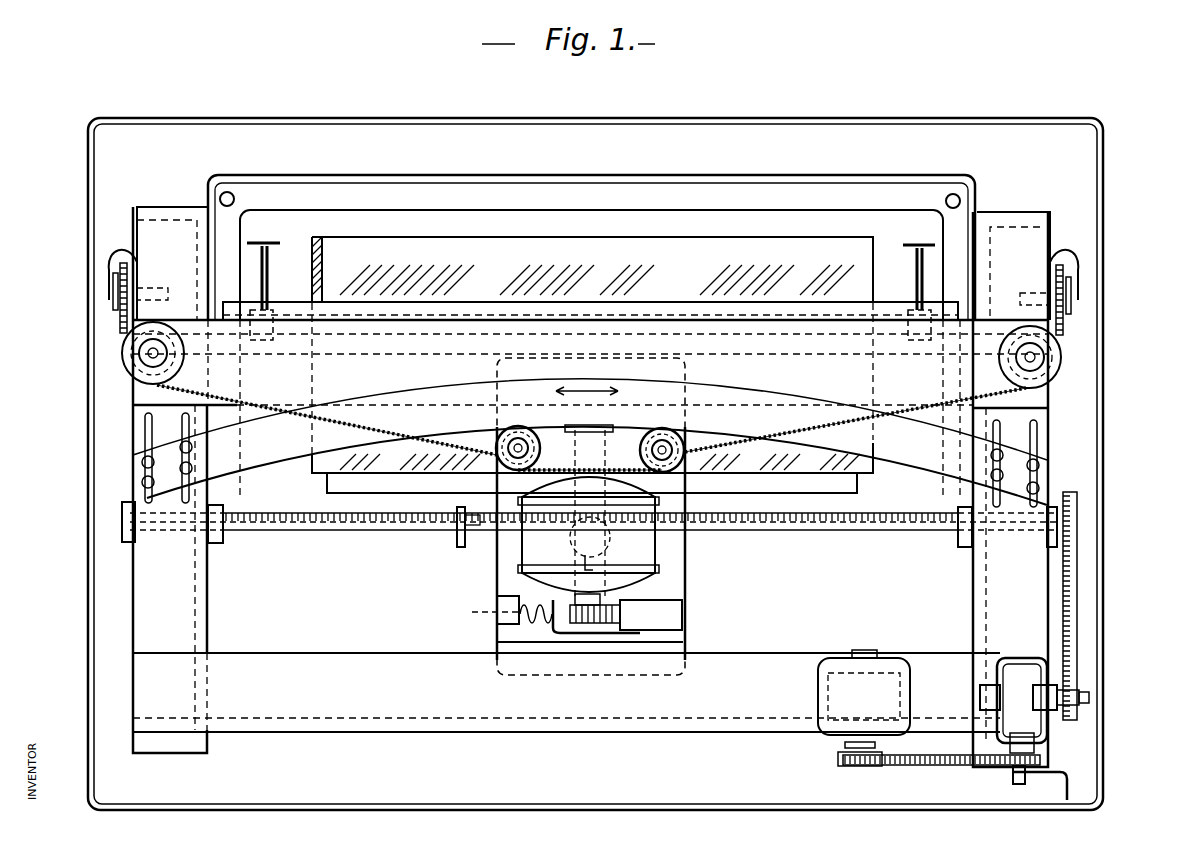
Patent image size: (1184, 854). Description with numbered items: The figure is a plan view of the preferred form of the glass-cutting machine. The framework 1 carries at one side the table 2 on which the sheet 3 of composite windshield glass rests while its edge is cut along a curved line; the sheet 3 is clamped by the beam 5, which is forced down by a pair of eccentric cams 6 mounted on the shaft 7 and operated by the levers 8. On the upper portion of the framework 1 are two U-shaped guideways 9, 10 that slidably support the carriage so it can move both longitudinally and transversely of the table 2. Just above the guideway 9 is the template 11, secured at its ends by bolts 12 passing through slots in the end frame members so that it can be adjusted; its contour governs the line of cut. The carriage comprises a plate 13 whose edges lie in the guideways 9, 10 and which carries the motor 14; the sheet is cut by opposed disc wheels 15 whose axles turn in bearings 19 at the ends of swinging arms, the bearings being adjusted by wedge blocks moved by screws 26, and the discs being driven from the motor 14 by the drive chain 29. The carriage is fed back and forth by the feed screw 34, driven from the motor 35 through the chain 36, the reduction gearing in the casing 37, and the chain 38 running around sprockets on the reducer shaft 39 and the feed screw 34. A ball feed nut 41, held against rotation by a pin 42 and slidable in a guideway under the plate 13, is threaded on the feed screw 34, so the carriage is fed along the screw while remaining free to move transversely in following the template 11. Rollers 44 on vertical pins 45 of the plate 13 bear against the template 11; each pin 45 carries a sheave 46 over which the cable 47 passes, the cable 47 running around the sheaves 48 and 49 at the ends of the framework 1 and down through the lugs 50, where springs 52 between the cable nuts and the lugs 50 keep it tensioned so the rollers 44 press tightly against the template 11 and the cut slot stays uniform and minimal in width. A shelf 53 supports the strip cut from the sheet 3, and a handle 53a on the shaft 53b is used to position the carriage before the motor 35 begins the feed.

The framework 1 is at (209, 610).
The table 2 is at (535, 218).
The sheet 3 is at (445, 245).
The beam 5 is at (493, 304).
The eccentric cams 6 is at (262, 318).
The shaft 7 is at (850, 318).
The levers 8 is at (268, 262).
The guideway 9 is at (340, 302).
The guideway 10 is at (310, 662).
The template 11 is at (275, 445).
The bolts 12 is at (140, 484).
The carriage plate 13 is at (683, 636).
The motor 14 is at (648, 580).
The disc wheel 15 is at (616, 418).
The bearing 19 is at (472, 612).
The screw 26 is at (456, 542).
The drive chain 29 is at (607, 624).
The feed screw 34 is at (848, 532).
The motor 35 is at (820, 700).
The chain 36 is at (955, 768).
The casing 37 is at (1018, 680).
The chain 38 is at (1078, 590).
The shaft 39 is at (1088, 697).
The ball feed nut 41 is at (600, 540).
The pin 42 is at (660, 562).
The rollers 44 is at (530, 428).
The vertical pins 45 is at (680, 470).
The sheave 46 is at (497, 440).
The cable 47 is at (815, 432).
The sheave 48 is at (122, 370).
The sheave 49 is at (118, 300).
The lugs 50 is at (128, 250).
The springs 52 is at (1072, 258).
The shelf 53 is at (395, 483).
The handle 53a is at (1055, 782).
The shaft 53b is at (1020, 786).